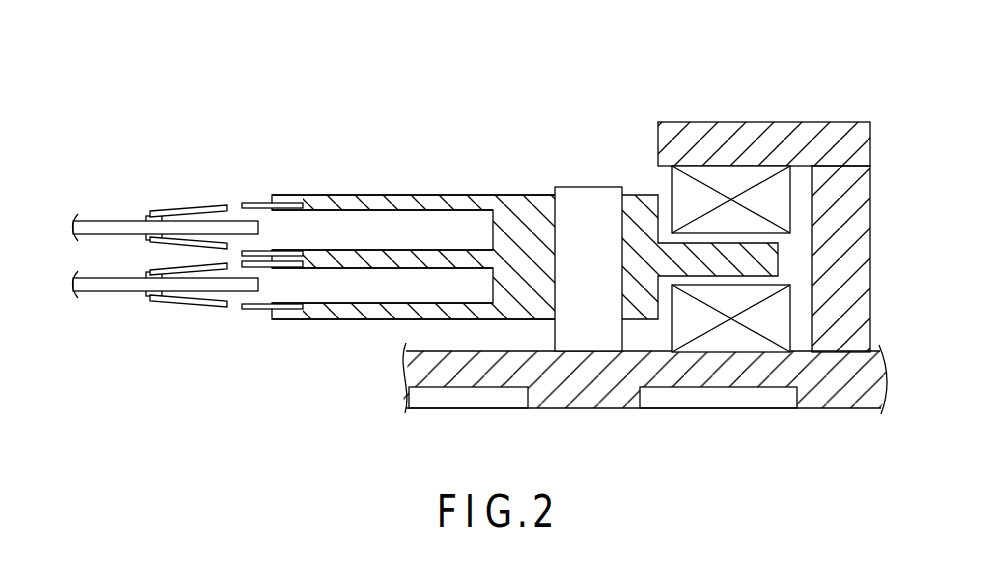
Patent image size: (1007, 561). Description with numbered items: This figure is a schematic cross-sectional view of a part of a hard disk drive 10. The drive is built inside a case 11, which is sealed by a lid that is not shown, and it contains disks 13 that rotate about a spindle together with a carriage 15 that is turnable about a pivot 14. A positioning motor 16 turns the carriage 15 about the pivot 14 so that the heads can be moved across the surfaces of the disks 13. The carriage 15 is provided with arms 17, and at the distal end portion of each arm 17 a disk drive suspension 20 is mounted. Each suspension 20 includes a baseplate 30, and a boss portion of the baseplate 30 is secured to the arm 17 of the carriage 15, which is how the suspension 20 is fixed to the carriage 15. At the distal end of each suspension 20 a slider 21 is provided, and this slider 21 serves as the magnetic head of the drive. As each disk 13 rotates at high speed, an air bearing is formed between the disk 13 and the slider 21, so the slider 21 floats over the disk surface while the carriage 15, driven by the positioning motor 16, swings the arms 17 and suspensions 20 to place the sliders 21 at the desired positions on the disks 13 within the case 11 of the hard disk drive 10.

The hard disk drive 10 is at (716, 79).
The case 11 is at (827, 408).
The disks 13 is at (92, 227).
The pivot 14 is at (587, 194).
The carriage 15 is at (450, 196).
The positioning motor 16 is at (727, 340).
The arms 17 is at (339, 194).
The disk drive suspension 20 is at (200, 209).
The slider 21 is at (144, 217).
The baseplate 30 is at (256, 202).